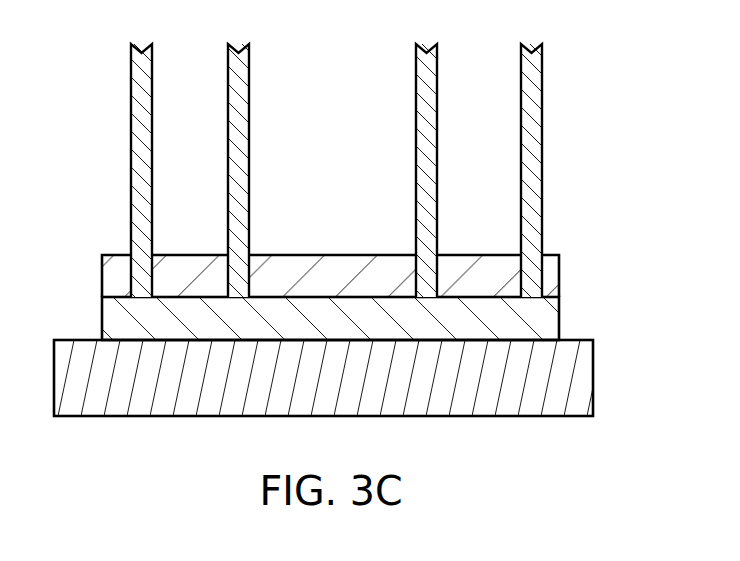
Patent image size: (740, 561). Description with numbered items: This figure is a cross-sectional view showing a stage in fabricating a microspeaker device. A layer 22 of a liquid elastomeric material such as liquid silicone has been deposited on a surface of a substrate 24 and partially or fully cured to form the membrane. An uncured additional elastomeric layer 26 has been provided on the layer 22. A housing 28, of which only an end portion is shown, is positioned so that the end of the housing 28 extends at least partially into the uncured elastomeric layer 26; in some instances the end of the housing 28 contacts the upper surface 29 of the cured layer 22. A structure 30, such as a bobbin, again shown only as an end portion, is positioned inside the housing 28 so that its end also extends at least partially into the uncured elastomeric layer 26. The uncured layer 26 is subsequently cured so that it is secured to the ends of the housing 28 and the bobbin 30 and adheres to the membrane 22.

The layer 22 is at (550, 310).
The substrate 24 is at (587, 372).
The additional elastomeric layer 26 is at (552, 265).
The housing 28 is at (131, 93).
The upper surface 29 is at (338, 288).
The structure 30 is at (249, 130).